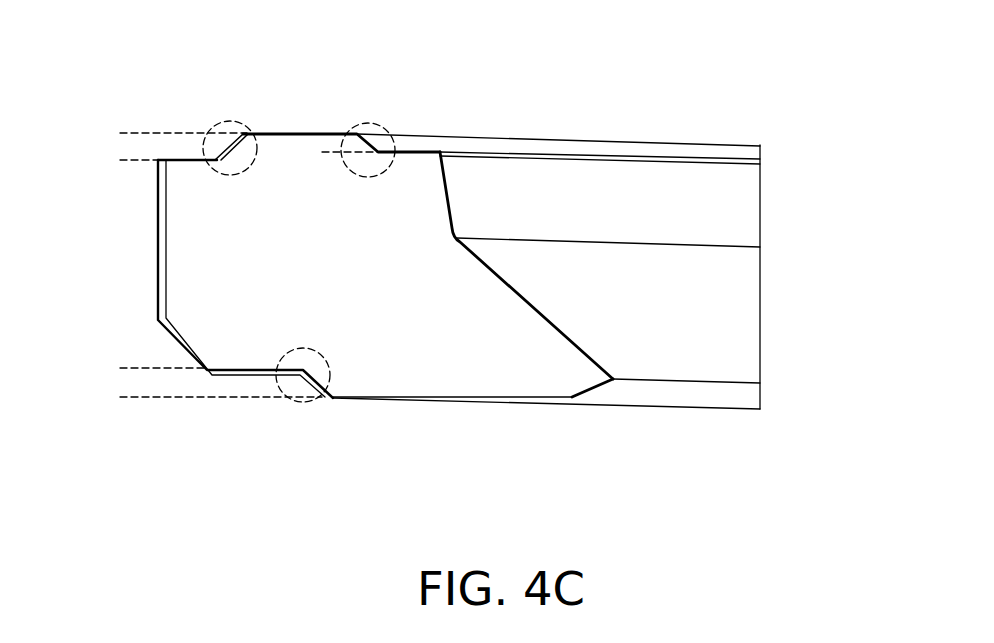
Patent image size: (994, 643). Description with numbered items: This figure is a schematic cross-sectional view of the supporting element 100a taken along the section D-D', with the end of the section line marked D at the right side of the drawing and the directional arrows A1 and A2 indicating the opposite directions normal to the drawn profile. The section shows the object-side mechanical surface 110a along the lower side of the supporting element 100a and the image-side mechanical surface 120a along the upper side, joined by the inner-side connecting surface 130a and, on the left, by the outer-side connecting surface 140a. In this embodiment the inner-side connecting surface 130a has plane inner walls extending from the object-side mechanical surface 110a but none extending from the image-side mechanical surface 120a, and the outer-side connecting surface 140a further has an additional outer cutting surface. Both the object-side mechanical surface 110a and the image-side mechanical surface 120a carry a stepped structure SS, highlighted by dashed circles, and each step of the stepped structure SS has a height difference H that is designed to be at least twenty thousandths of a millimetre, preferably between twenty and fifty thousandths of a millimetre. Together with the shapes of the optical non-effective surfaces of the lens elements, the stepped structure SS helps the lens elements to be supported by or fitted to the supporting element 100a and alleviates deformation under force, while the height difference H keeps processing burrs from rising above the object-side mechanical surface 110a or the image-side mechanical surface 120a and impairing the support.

The supporting element 100a is at (836, 492).
The object-side mechanical surface 110a is at (360, 398).
The image-side mechanical surface 120a is at (320, 134).
The inner-side connecting surface 130a is at (578, 343).
The outer-side connecting surface 140a is at (158, 235).
The stepped structure SS is at (280, 362).
The height difference H is at (118, 133).
The section D-D' D is at (458, 117).
The first direction A1 is at (432, 455).
The second direction A2 is at (433, 15).